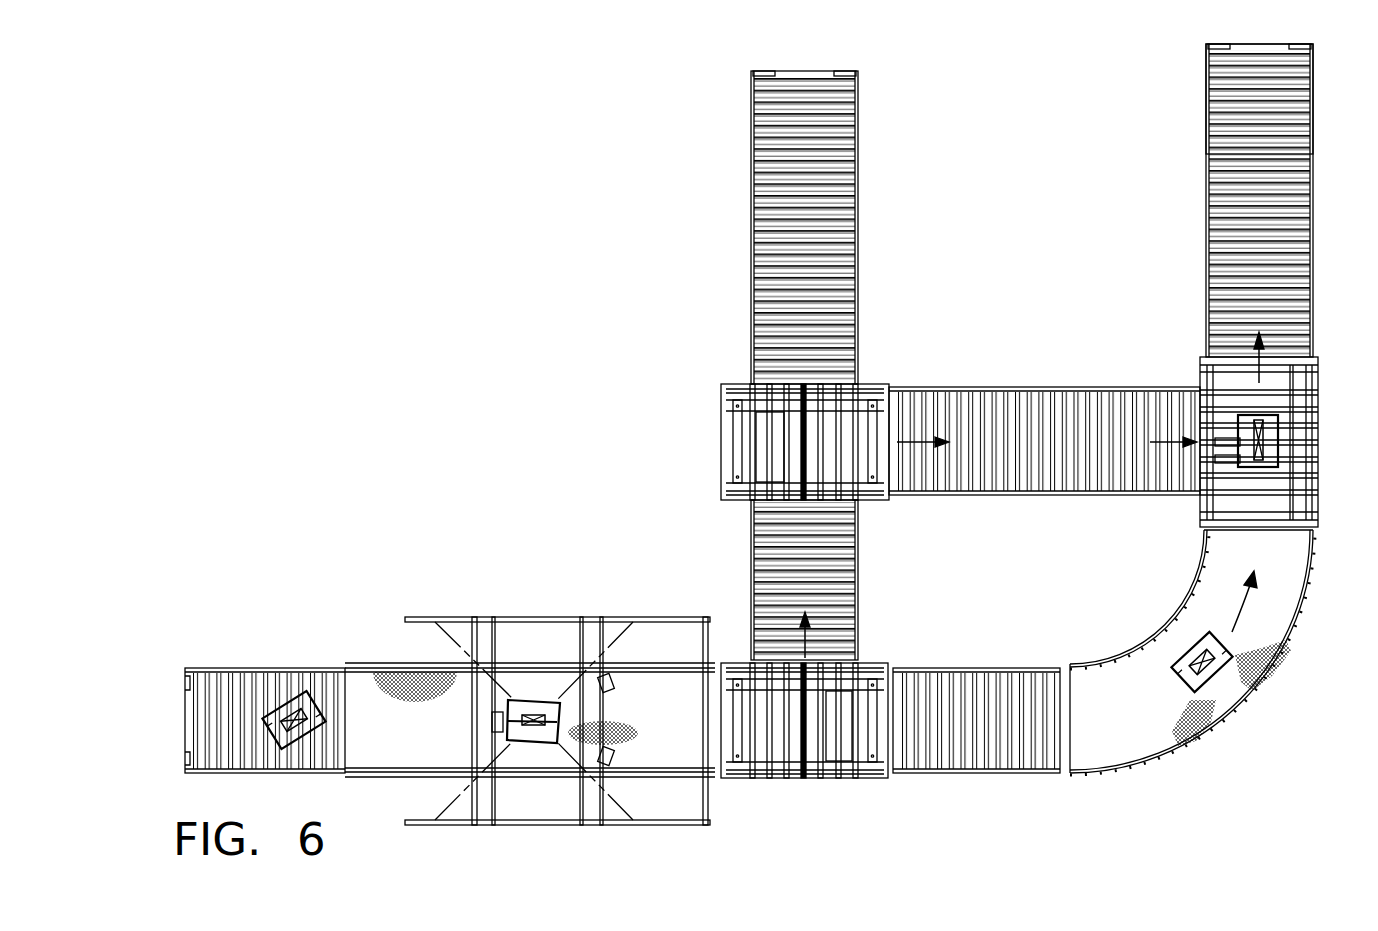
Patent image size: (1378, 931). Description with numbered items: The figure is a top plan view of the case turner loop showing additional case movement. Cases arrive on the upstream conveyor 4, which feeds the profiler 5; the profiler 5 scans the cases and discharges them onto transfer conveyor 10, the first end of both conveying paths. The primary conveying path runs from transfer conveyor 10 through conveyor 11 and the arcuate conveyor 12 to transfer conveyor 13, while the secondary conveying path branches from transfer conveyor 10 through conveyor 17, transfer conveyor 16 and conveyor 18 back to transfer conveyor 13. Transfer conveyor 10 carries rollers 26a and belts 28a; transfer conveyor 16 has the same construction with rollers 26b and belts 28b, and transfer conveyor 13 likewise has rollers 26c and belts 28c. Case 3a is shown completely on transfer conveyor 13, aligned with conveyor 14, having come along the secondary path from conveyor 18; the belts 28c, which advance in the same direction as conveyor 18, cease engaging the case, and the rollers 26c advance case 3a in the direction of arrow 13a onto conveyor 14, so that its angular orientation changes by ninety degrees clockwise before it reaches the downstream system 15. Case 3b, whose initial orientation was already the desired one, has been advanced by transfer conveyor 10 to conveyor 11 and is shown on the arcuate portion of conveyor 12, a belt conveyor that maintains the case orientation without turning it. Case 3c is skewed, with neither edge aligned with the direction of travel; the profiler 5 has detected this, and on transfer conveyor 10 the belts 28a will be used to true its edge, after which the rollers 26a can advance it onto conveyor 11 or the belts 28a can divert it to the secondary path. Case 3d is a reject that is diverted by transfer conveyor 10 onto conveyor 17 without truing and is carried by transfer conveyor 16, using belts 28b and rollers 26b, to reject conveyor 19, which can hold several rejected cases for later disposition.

The case 3a is at (1268, 418).
The case 3b is at (1245, 660).
The case 3c is at (548, 713).
The case 3d is at (285, 742).
The upstream conveyor 4 is at (237, 668).
The profiler 5 is at (506, 538).
The transfer conveyor 10 is at (793, 777).
The conveyor 11 is at (990, 775).
The conveyor 12 is at (1195, 735).
The transfer conveyor 13 is at (1200, 378).
The arrow 13a is at (1260, 372).
The conveyor 14 is at (1206, 245).
The downstream system 15 is at (1206, 85).
The transfer conveyor 16 is at (720, 430).
The conveyor 17 is at (751, 565).
The conveyor 18 is at (1018, 387).
The reject conveyor 19 is at (858, 262).
The rollers 26a is at (847, 760).
The rollers 26b is at (770, 460).
The rollers 26c is at (1233, 467).
The belts 28a is at (822, 760).
The belts 28b is at (775, 405).
The belts 28c is at (1230, 442).